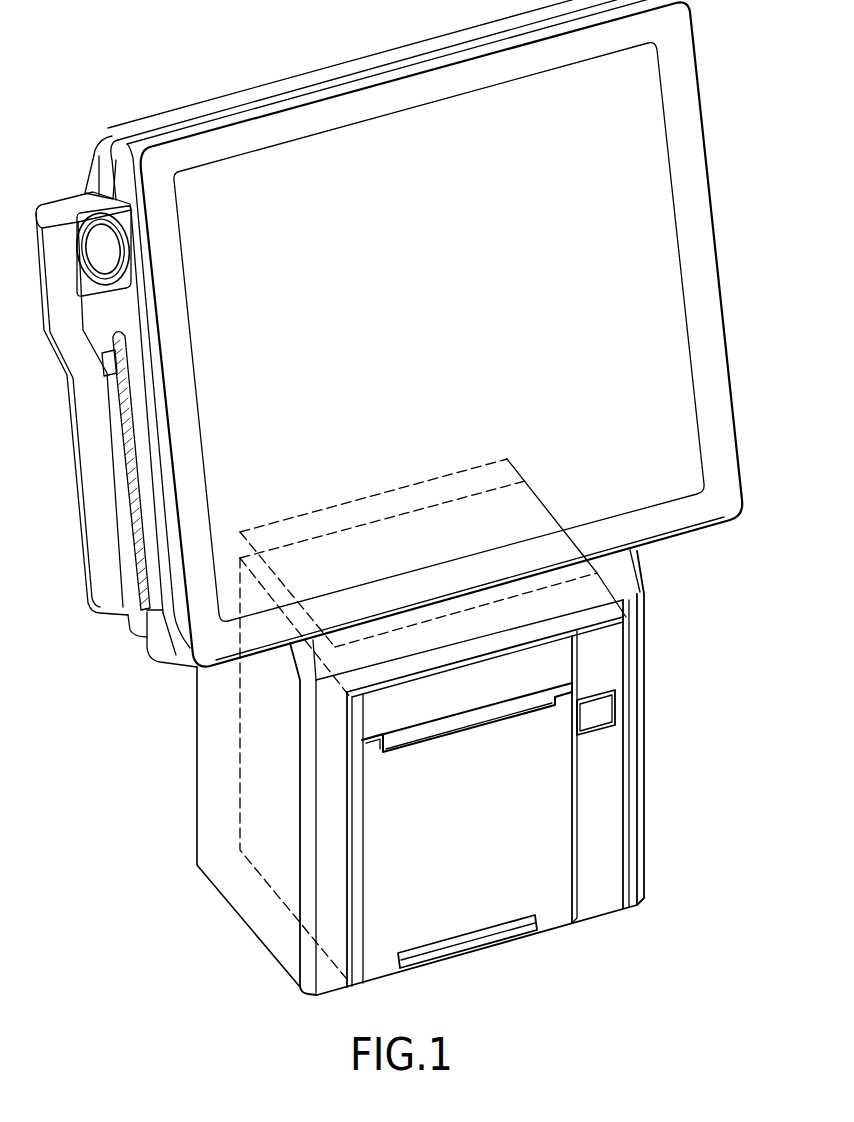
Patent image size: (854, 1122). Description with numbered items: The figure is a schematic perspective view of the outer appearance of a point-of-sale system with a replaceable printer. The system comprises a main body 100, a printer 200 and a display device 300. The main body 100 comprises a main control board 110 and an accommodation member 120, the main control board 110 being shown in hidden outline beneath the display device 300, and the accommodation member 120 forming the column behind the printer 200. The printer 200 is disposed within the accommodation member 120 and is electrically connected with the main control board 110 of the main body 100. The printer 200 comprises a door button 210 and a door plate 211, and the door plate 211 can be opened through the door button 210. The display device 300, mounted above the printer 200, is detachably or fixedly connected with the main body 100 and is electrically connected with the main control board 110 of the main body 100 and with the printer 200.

The main body 100 is at (643, 812).
The main control board 110 is at (534, 487).
The accommodation member 120 is at (240, 783).
The printer 200 is at (577, 787).
The door button 210 is at (590, 712).
The door plate 211 is at (457, 900).
The display device 300 is at (690, 190).